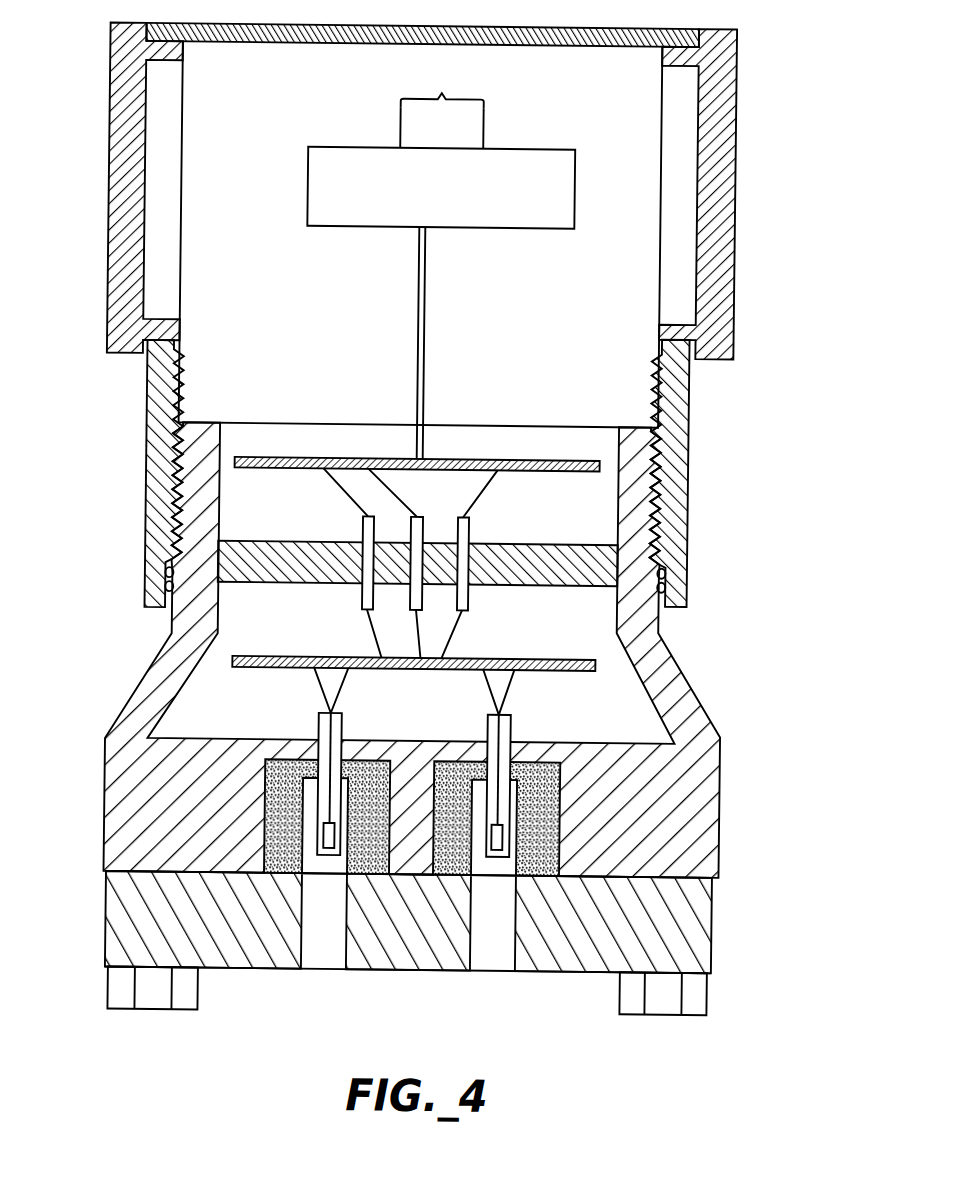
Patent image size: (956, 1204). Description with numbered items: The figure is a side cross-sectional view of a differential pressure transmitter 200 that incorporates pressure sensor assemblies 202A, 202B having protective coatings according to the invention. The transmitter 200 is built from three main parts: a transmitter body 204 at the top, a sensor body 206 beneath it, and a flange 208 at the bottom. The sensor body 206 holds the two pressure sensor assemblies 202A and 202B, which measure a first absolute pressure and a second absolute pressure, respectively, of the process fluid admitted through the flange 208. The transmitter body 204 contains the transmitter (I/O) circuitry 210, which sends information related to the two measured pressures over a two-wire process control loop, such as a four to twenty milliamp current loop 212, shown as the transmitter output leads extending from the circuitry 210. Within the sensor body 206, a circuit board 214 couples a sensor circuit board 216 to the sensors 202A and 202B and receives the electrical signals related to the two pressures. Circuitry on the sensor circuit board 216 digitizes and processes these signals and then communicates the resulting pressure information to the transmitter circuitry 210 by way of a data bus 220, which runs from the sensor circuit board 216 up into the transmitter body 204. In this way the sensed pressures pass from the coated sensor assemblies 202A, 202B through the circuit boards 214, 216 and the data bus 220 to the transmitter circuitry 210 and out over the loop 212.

The differential pressure transmitter 200 is at (105, 214).
The pressure sensor assembly 202A is at (348, 738).
The pressure sensor assembly 202B is at (517, 721).
The transmitter body 204 is at (733, 212).
The sensor body 206 is at (705, 710).
The flange 208 is at (717, 903).
The transmitter circuitry 210 is at (571, 179).
The current loop 212 is at (396, 138).
The circuit board 214 is at (314, 658).
The sensor circuit board 216 is at (581, 459).
The data bus 220 is at (422, 268).